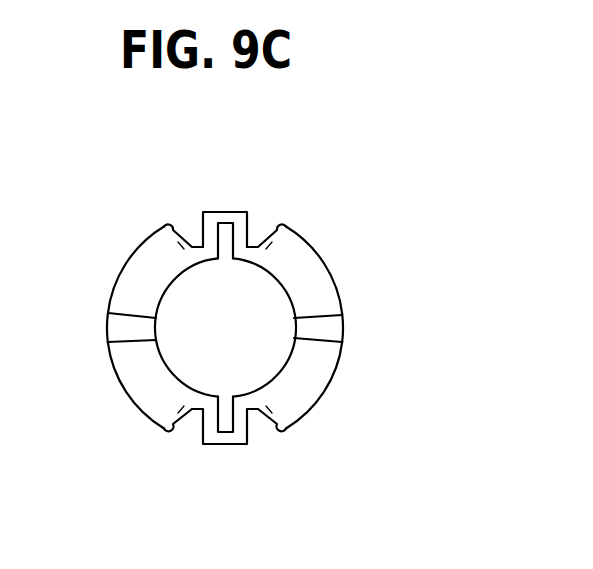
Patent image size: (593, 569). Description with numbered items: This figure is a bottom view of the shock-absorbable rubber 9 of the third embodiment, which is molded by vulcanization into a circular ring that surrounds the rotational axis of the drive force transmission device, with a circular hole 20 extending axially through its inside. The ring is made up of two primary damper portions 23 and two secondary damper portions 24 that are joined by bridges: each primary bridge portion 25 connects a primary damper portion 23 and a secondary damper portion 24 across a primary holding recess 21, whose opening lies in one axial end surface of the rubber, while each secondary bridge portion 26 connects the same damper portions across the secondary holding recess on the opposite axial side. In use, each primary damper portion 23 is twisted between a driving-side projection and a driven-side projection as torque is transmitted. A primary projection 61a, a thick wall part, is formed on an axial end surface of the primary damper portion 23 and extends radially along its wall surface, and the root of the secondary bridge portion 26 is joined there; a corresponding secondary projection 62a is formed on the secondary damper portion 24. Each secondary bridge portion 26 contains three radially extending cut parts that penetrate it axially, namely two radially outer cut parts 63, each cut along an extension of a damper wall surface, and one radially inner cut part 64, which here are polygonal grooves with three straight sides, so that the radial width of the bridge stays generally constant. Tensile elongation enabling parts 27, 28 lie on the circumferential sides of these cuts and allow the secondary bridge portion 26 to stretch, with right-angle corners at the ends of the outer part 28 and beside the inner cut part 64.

The shock-absorbable rubber 9 is at (80, 243).
The circular hole 20 is at (190, 353).
The primary holding recess 21 is at (123, 316).
The primary damper portion 23 is at (302, 242).
The secondary damper portion 24 is at (152, 235).
The primary bridge portion 25 is at (107, 335).
The secondary bridge portion 26 is at (182, 158).
The tensile elongation enabling part 27 is at (193, 246).
The tensile elongation enabling part 28 is at (231, 212).
The primary projection 61a is at (182, 411).
The secondary projection 62a is at (280, 432).
The radially outer cut part 63 is at (195, 411).
The radially inner cut part 64 is at (232, 416).